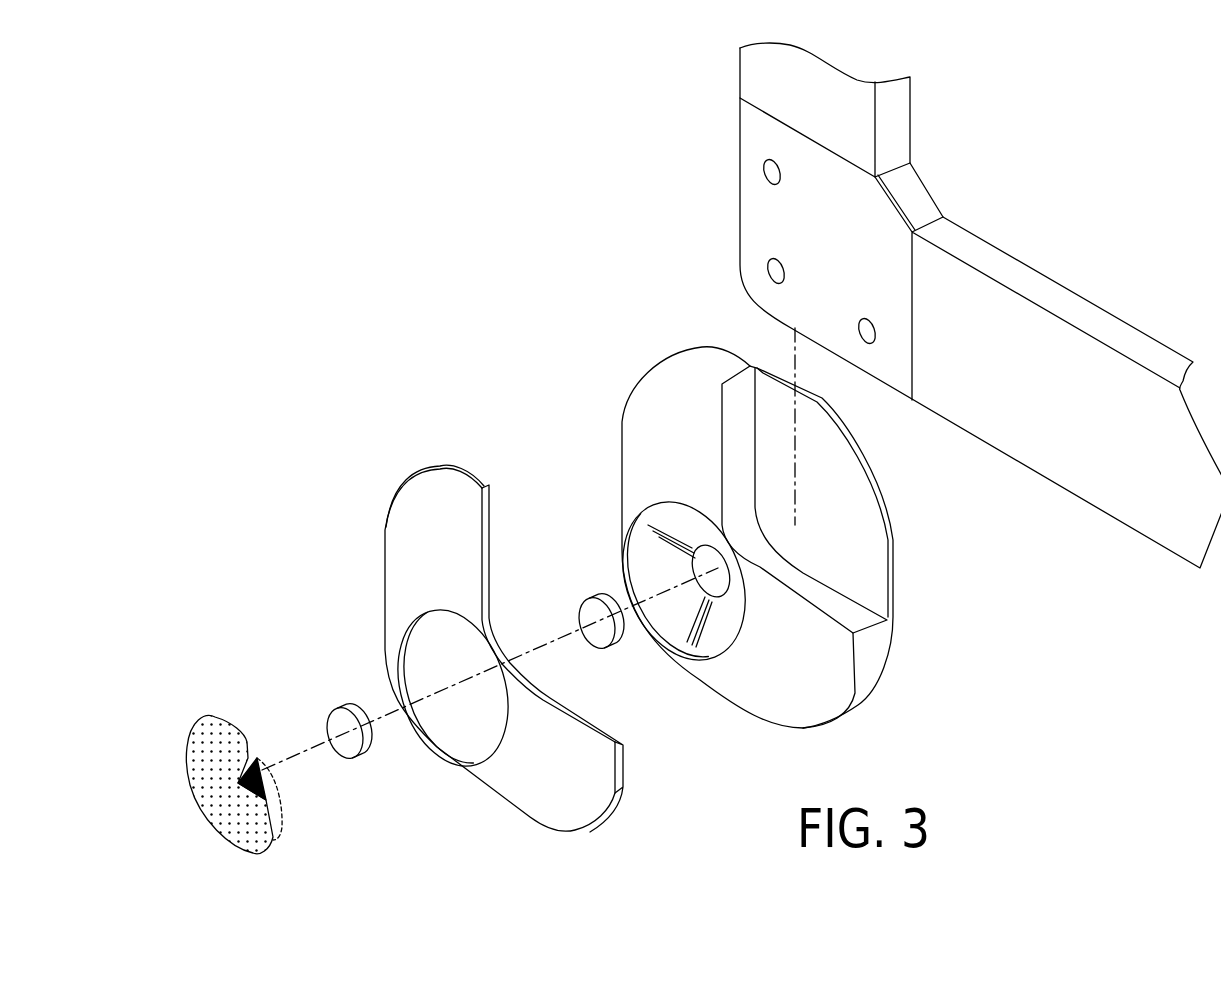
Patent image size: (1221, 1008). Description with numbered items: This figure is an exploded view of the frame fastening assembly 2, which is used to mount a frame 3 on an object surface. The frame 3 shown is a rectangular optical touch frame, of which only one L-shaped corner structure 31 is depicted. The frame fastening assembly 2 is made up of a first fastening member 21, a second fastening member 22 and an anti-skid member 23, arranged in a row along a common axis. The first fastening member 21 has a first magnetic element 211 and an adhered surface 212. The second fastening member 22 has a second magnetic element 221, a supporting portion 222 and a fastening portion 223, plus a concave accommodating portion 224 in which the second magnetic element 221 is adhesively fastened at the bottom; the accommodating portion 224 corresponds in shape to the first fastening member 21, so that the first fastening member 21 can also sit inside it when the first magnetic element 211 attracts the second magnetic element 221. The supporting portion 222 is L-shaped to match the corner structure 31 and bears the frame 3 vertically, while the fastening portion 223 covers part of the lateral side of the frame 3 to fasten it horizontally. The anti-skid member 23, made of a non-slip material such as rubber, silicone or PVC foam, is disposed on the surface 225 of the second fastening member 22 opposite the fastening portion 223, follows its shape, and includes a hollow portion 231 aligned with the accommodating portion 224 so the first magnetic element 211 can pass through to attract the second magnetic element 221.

The frame fastening assembly 2 is at (112, 453).
The frame 3 is at (920, 305).
The corner structure 31 is at (762, 207).
The first fastening member 21 is at (290, 623).
The first magnetic element 211 is at (348, 710).
The adhered surface 212 is at (213, 743).
The second fastening member 22 is at (580, 397).
The second magnetic element 221 is at (614, 640).
The supporting portion 222 is at (857, 623).
The fastening portion 223 is at (856, 560).
The accommodating portion 224 is at (648, 541).
The surface 225 is at (652, 445).
The anti-skid member 23 is at (473, 635).
The hollow portion 231 is at (443, 670).